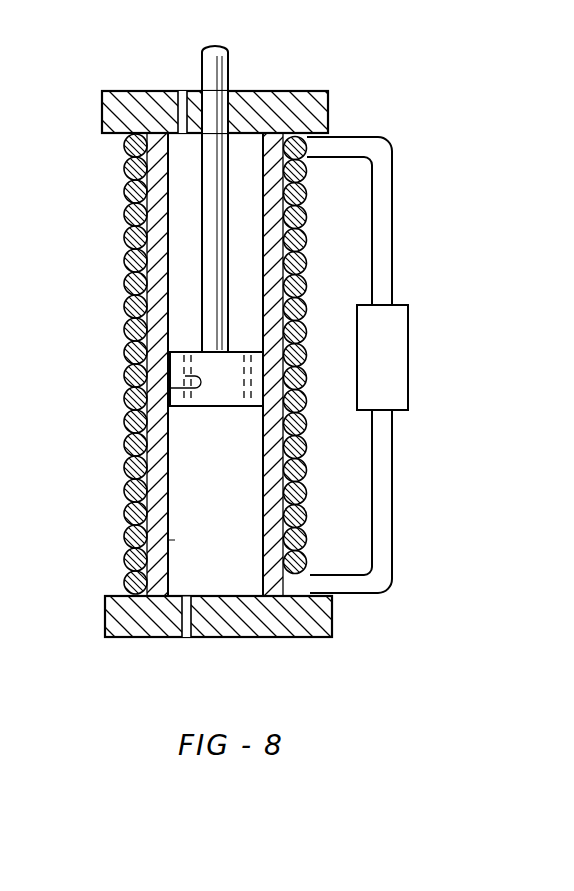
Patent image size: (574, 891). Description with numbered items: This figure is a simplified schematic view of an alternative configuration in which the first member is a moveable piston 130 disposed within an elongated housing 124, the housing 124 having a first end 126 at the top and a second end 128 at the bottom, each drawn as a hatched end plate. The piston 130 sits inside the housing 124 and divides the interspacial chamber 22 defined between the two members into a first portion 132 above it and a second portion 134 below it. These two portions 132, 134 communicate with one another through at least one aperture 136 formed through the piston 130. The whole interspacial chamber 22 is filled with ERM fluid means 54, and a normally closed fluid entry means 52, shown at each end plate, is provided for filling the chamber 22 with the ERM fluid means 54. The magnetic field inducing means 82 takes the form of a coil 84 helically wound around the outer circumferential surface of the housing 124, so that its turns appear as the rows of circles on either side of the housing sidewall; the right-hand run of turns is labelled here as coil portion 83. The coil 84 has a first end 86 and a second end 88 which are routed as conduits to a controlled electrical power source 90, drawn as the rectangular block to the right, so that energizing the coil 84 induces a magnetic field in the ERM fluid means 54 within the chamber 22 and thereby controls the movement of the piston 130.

The interspacial chamber 22 is at (268, 528).
The fluid entry means 52 is at (180, 125).
The ERM fluid means 54 is at (168, 166).
The magnetic field inducing means 82 is at (125, 282).
The heating coil 83 is at (295, 355).
The coil 84 is at (125, 397).
The first end of coil 86 is at (376, 135).
The second end of coil 88 is at (392, 512).
The controlled electrical power source 90 is at (362, 305).
The elongated housing 124 is at (180, 547).
The first end of housing 126 is at (244, 91).
The second end of housing 128 is at (322, 637).
The piston 130 is at (146, 274).
The first portion of interspacial chamber 132 is at (168, 190).
The second portion of interspacial chamber 134 is at (195, 570).
The aperture 136 is at (207, 407).